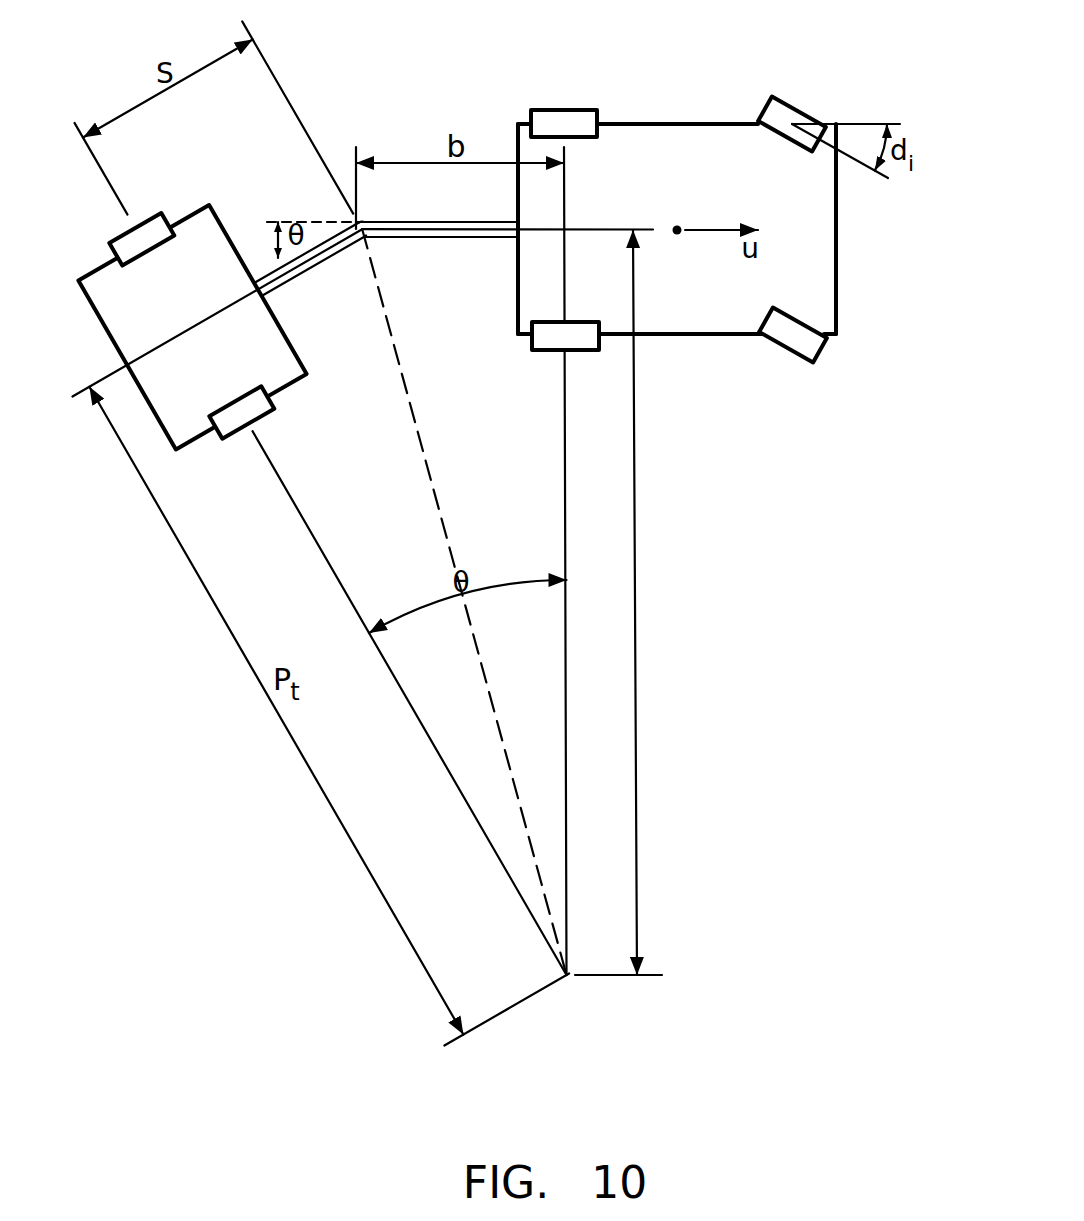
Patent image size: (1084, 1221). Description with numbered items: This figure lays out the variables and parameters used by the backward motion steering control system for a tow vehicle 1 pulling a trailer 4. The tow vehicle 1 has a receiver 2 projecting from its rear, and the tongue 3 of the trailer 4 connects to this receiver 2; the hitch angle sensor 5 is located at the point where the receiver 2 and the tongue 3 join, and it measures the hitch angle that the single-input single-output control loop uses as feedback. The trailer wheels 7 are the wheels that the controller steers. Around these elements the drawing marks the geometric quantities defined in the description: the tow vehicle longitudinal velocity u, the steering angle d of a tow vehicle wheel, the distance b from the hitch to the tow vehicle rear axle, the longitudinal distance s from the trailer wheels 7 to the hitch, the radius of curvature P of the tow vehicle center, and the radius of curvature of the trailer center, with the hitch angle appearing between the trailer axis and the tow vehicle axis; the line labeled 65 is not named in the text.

The tow vehicle 1 is at (745, 96).
The receiver 2 is at (454, 220).
The tongue 3 is at (254, 256).
The trailer 4 is at (183, 197).
The hitch angle sensor 5 is at (366, 215).
The trailer wheels 7 is at (142, 214).
The reference line P 65 is at (665, 595).